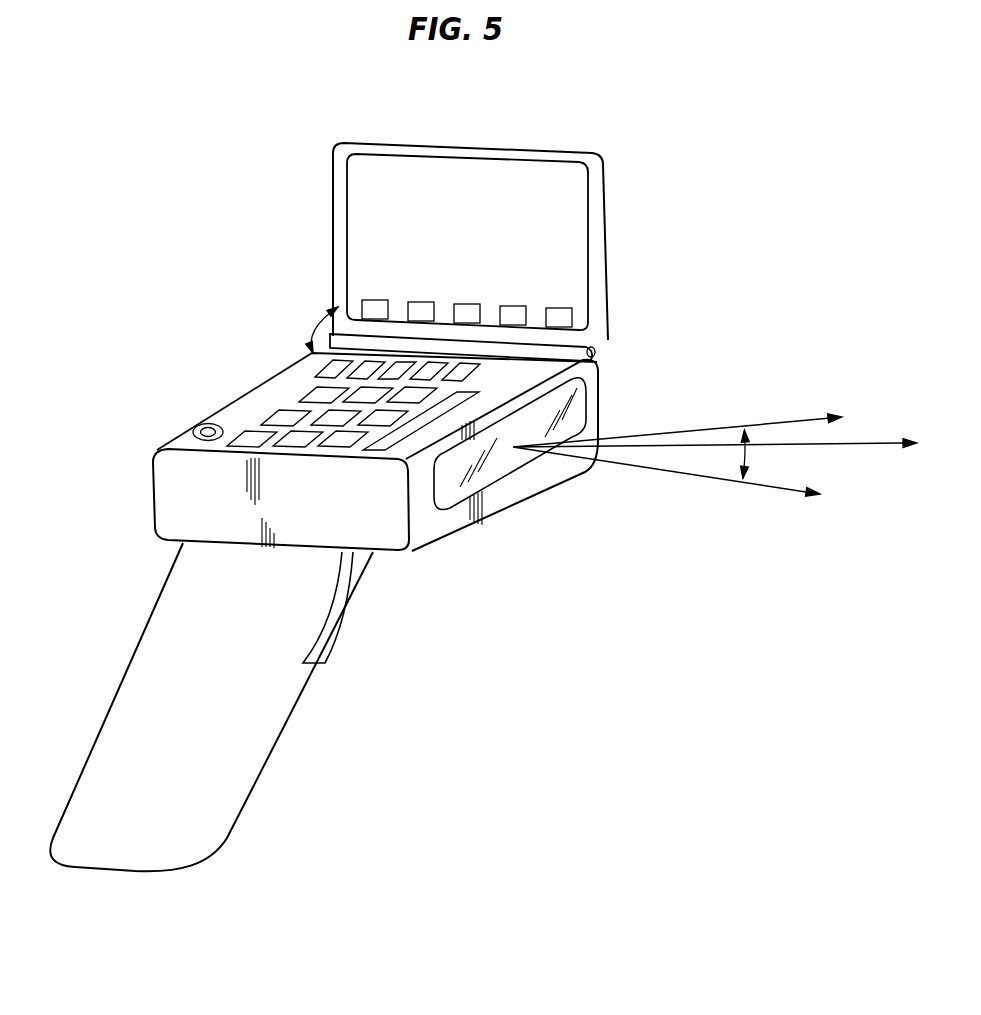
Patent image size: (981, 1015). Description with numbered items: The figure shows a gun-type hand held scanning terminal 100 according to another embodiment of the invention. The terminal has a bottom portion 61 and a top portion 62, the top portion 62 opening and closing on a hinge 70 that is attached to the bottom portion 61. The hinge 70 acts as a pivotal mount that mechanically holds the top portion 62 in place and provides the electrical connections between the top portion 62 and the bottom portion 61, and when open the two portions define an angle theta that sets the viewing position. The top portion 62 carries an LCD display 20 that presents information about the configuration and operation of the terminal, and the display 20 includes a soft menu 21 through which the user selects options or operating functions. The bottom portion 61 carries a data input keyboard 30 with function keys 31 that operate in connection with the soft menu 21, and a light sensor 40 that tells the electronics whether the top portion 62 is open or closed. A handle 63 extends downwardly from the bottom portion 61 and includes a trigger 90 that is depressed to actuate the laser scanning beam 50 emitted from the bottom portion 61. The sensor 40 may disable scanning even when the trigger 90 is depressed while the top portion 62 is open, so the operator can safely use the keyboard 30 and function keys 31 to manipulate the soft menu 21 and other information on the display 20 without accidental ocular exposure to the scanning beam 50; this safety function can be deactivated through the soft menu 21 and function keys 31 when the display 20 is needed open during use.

The gun-type hand held scanning terminal 100 is at (443, 100).
The LCD display 20 is at (553, 277).
The soft menu 21 is at (370, 307).
The data input keyboard 30 is at (288, 385).
The function keys 31 is at (535, 355).
The light sensor 40 is at (213, 424).
The scanning beam 50 is at (746, 452).
The bottom portion 61 is at (375, 532).
The top portion 62 is at (332, 222).
The handle 63 is at (217, 730).
The hinge 70 is at (596, 350).
The trigger 90 is at (349, 646).